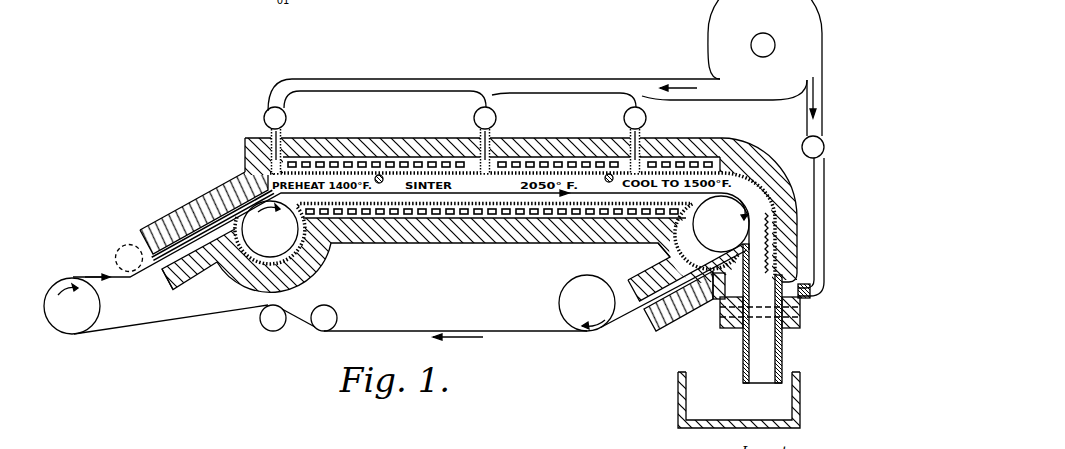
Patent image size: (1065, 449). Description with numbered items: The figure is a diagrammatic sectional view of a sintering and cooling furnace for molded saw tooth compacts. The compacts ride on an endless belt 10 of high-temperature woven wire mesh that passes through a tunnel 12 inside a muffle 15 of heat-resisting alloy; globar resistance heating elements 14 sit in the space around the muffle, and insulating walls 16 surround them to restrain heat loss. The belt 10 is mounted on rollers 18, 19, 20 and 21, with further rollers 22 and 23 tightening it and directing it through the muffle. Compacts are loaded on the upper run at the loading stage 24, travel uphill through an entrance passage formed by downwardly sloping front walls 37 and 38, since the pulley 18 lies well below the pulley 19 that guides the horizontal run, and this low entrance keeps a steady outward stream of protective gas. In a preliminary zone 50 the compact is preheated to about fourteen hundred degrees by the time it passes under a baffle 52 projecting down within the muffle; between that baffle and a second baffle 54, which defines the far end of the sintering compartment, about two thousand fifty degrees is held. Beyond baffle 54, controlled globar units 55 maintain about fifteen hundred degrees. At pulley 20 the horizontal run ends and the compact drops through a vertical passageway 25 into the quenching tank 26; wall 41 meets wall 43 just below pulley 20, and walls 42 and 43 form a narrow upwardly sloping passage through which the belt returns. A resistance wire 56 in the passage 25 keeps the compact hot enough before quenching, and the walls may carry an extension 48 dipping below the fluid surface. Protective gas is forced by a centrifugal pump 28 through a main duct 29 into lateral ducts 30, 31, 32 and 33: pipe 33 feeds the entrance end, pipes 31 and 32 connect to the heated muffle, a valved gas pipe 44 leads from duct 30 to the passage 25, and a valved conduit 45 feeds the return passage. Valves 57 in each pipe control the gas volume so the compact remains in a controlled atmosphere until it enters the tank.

The endless belt 10 is at (130, 280).
The tunnel 12 is at (417, 191).
The heating element 14 is at (345, 164).
The muffle 15 is at (415, 172).
The insulating walls 16 is at (372, 140).
The roller 18 is at (72, 306).
The roller 19 is at (270, 229).
The roller 20 is at (721, 224).
The roller 21 is at (587, 303).
The roller 22 is at (298, 318).
The roller 23 is at (129, 258).
The loading stage 24 is at (86, 268).
The vertical passageway 25 is at (762, 313).
The quenching tank 26 is at (679, 400).
The centrifugal pump 28 is at (765, 68).
The main duct 29 is at (537, 95).
The lateral duct 30 is at (808, 96).
The lateral duct 31 is at (629, 131).
The lateral duct 32 is at (478, 130).
The lateral duct 33 is at (270, 131).
The front wall 37 is at (153, 223).
The front wall 38 is at (172, 284).
The wall 41 is at (716, 341).
The wall 42 is at (647, 272).
The wall 43 is at (649, 325).
The valved gas pipe 44 is at (806, 292).
The valved conduit 45 is at (706, 312).
The extension 48 is at (782, 360).
The preliminary zone 50 is at (243, 187).
The baffle 52 is at (384, 181).
The baffle 54 is at (605, 181).
The globar units 55 is at (684, 163).
The resistance wire 56 is at (766, 220).
The valves 57 is at (285, 114).